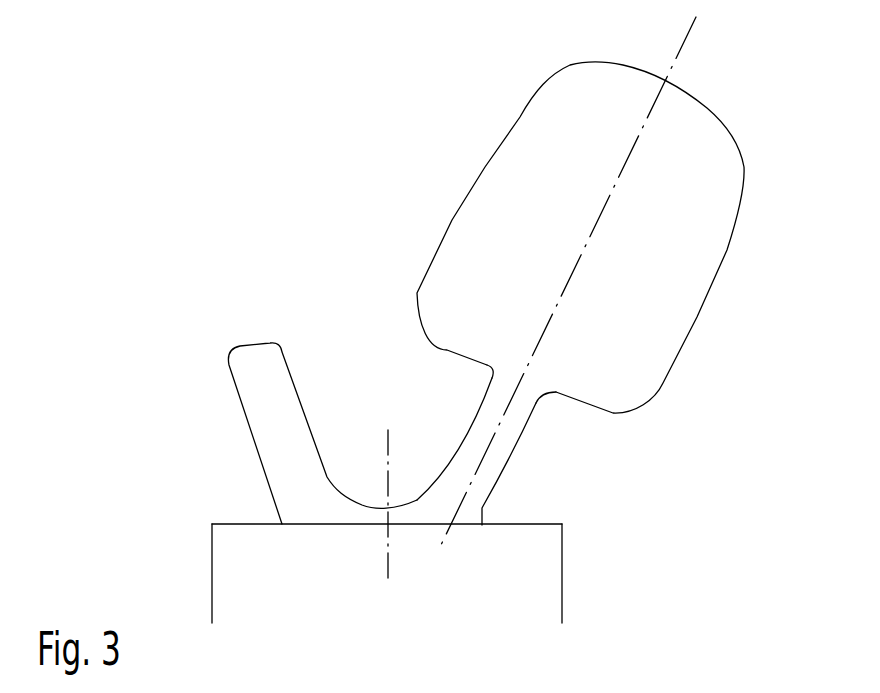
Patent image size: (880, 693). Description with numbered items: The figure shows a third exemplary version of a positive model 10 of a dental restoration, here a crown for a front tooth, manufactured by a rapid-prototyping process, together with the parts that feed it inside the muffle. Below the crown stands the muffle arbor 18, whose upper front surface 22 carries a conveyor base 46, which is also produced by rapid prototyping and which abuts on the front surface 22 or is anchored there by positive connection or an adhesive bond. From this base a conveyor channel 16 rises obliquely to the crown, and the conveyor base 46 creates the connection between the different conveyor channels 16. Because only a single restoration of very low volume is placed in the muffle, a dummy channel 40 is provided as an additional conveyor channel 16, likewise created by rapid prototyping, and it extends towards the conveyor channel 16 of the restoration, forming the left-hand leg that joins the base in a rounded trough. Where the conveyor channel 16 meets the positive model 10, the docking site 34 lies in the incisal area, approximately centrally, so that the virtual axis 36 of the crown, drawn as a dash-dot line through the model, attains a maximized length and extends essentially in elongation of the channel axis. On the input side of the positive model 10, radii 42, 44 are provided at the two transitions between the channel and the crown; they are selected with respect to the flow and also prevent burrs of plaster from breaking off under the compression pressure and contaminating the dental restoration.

The positive model 10 is at (725, 181).
The conveyor channel 16 is at (503, 440).
The muffle arbor 18 is at (540, 585).
The front surface 22 is at (558, 506).
The docking site 34 is at (486, 343).
The virtual axis 36 is at (683, 46).
The dummy channel 40 is at (252, 393).
The radius 42 is at (466, 380).
The radius 44 is at (560, 418).
The conveyor base 46 is at (400, 515).